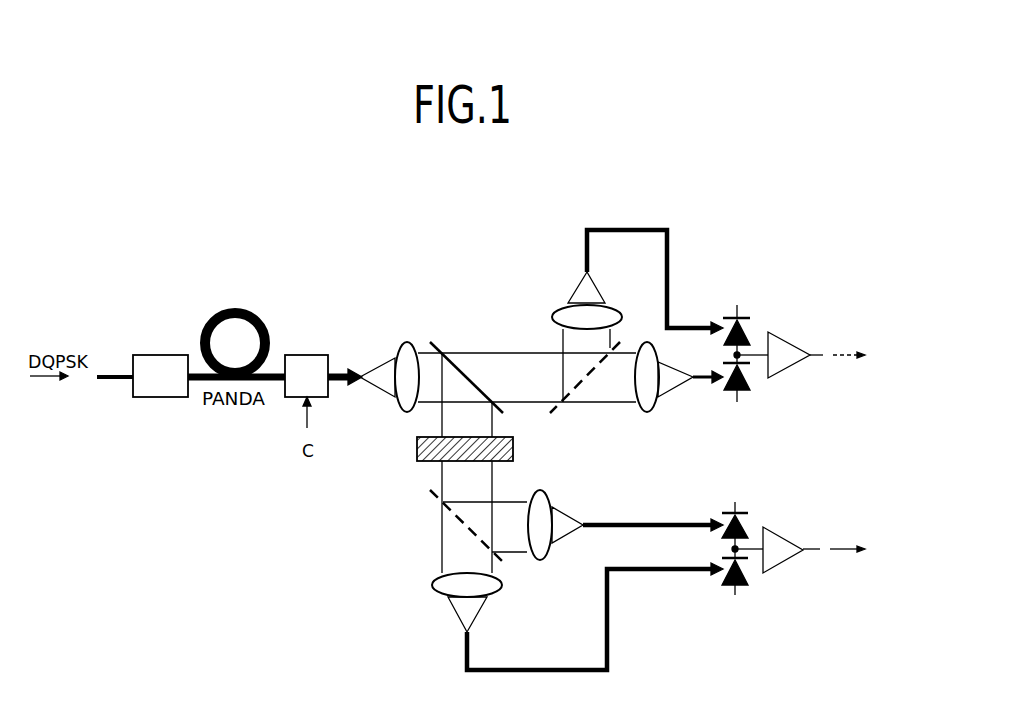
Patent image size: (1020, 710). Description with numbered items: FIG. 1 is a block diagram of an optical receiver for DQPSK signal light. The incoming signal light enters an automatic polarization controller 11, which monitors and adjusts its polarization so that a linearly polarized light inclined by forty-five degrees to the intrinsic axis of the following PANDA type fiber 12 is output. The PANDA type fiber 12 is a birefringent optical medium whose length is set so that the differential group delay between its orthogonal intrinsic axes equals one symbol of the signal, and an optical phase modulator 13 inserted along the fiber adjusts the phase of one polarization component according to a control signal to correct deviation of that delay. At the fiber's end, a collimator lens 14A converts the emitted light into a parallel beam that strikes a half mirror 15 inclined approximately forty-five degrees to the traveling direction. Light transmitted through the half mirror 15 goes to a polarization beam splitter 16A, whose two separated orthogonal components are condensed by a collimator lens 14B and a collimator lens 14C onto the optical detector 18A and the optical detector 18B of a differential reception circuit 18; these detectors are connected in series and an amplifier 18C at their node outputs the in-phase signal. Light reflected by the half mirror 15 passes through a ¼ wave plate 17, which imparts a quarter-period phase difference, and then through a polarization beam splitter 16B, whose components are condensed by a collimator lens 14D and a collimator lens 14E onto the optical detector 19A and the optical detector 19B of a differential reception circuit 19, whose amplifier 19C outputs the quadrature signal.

The automatic polarization controller 11 is at (163, 355).
The PANDA type fiber 12 is at (245, 312).
The optical phase modulator 13 is at (307, 355).
The collimator lens 14A is at (405, 343).
The collimator lens 14B is at (653, 415).
The collimator lens 14C is at (570, 307).
The collimator lens 14D is at (428, 590).
The collimator lens 14E is at (540, 562).
The half mirror 15 is at (468, 368).
The polarization beam splitter 16A is at (587, 380).
The polarization beam splitter 16B is at (468, 527).
The ¼ wave plate 17 is at (513, 450).
The differential reception circuit 18 is at (794, 330).
The optical detector 18A is at (743, 389).
The optical detector 18B is at (745, 332).
The amplifier 18C is at (790, 367).
The differential reception circuit 19 is at (793, 529).
The optical detector 19A is at (743, 585).
The optical detector 19B is at (747, 528).
The amplifier 19C is at (788, 562).